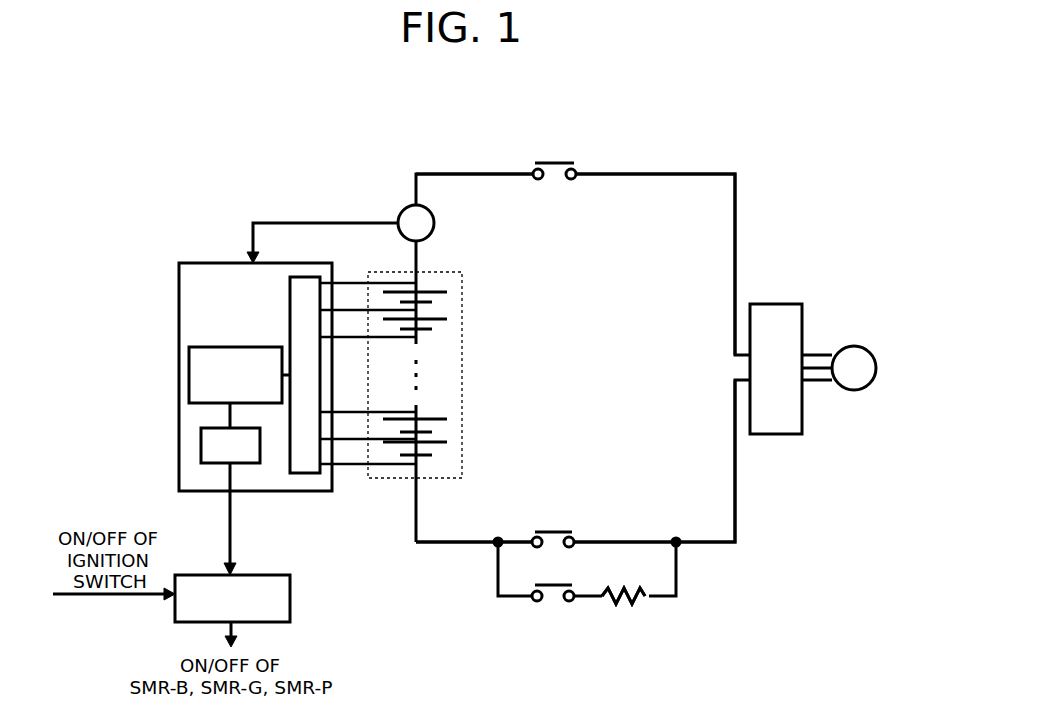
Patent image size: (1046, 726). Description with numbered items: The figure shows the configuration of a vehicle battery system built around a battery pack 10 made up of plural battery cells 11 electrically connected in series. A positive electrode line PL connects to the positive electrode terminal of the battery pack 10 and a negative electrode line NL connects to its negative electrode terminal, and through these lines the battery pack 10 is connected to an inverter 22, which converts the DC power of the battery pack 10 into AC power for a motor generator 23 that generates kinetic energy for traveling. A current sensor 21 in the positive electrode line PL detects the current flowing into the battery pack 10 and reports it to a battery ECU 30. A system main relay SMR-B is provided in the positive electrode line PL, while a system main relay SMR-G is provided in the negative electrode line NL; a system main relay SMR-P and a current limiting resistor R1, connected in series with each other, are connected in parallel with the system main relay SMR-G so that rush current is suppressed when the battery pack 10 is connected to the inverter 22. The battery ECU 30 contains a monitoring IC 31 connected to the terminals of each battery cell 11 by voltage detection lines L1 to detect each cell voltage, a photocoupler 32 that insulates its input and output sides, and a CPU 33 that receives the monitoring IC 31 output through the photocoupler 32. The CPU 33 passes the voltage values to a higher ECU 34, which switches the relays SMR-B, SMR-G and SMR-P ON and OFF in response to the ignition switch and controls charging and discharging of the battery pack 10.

The battery pack 10 is at (462, 368).
The battery cell 11 is at (447, 300).
The current sensor 21 is at (400, 211).
The inverter 22 is at (772, 435).
The motor generator 23 is at (853, 391).
The battery ECU 30 is at (202, 262).
The monitoring IC 31 is at (300, 474).
The photocoupler 32 is at (180, 373).
The CPU 33 is at (200, 444).
The higher ECU 34 is at (291, 600).
The positive electrode line PL is at (452, 172).
The negative electrode line NL is at (447, 545).
The voltage detection line L1 is at (344, 281).
The system main relay SMR-B is at (559, 158).
The system main relay SMR-G is at (558, 527).
The system main relay SMR-P is at (557, 608).
The current limiting resistor R1 is at (635, 605).